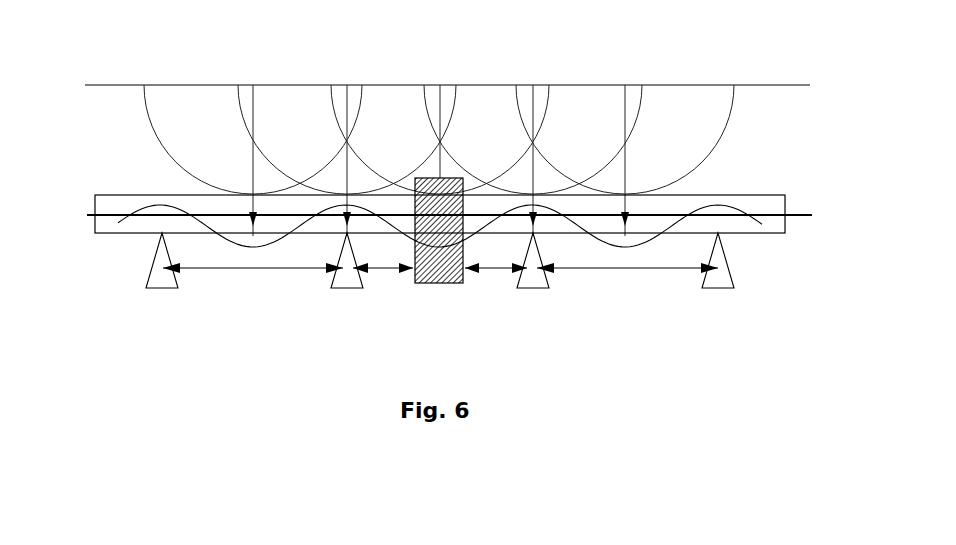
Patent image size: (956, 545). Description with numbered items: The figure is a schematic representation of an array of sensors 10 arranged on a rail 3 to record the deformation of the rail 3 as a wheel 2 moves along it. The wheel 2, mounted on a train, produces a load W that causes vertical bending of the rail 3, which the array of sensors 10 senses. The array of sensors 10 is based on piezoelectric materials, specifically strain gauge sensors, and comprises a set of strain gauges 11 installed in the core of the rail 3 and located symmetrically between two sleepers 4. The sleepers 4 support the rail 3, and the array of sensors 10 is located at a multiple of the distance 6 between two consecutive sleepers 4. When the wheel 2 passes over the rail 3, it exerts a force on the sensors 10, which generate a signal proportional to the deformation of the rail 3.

The wheel 2 is at (198, 100).
The load W is at (440, 98).
The rail 3 is at (119, 205).
The sleepers 4 is at (163, 282).
The distance between two consecutive sleepers 6 is at (440, 285).
The array of sensors 10 is at (440, 287).
The strain gauges 11 is at (488, 300).